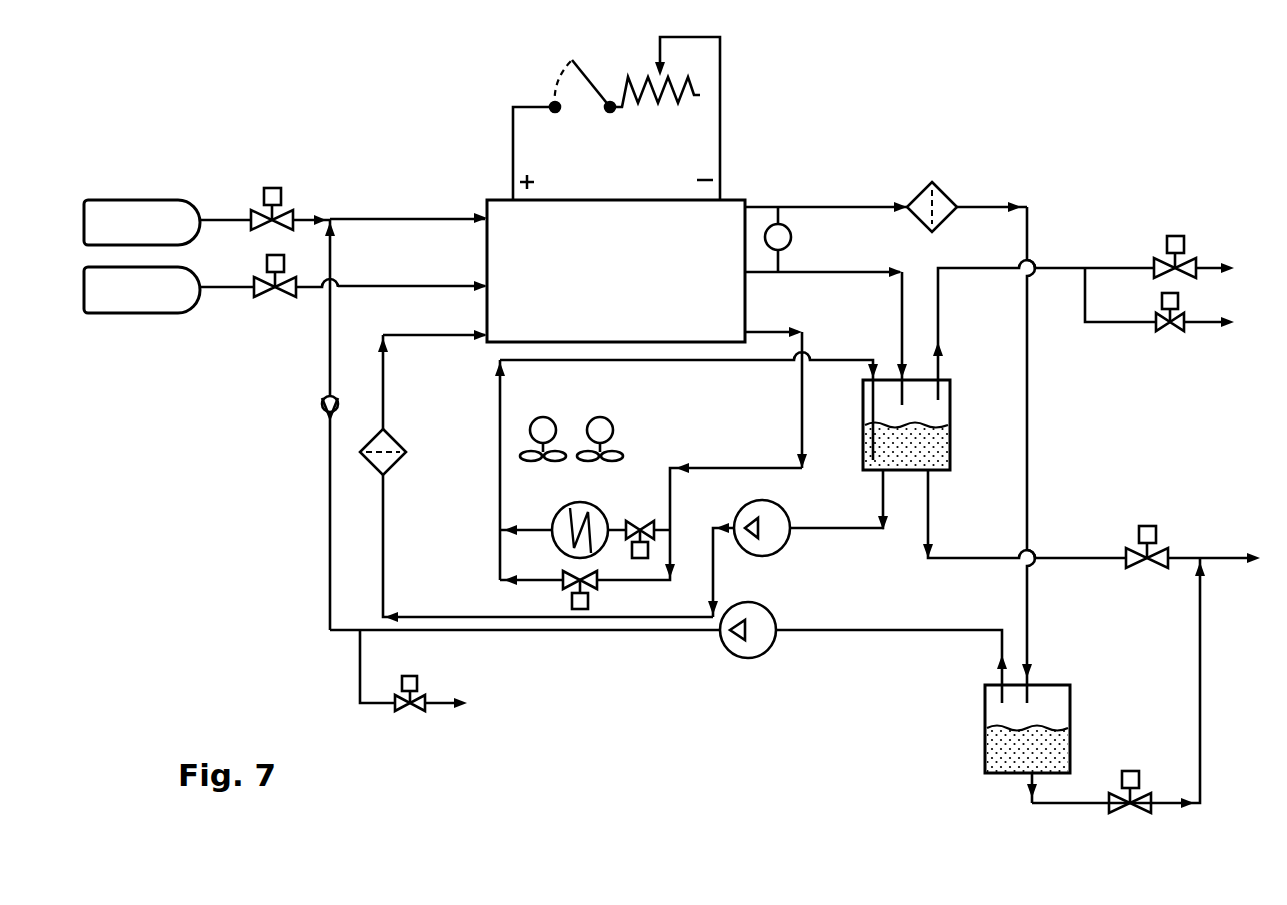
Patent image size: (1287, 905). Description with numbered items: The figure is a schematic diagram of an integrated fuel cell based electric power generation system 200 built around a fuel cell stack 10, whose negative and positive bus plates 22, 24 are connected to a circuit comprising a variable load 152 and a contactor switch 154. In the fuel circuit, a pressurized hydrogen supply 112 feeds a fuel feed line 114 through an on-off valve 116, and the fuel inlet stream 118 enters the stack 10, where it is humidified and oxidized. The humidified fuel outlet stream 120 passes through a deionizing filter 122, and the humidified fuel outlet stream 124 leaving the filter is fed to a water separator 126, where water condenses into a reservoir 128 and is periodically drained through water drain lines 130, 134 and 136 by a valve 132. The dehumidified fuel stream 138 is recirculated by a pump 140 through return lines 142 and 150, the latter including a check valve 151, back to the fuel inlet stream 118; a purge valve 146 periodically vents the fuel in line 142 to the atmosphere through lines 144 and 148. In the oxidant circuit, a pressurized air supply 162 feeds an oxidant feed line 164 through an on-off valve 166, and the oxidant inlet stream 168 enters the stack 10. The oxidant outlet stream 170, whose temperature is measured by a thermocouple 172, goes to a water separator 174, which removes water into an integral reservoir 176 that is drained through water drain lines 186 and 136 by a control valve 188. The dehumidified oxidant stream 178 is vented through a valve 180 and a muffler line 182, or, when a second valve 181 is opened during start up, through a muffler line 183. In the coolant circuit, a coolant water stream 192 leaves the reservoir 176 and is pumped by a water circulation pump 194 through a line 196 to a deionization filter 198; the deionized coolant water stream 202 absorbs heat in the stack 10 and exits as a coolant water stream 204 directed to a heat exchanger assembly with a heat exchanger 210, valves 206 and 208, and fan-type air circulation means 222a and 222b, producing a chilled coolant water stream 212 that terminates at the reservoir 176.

The fuel cell stack 10 is at (604, 213).
The negative bus plate 22 is at (745, 186).
The positive bus plate 24 is at (513, 185).
The hydrogen supply 112 is at (120, 205).
The fuel feed line 114 is at (232, 218).
The on-off valve 116 is at (283, 191).
The fuel inlet stream 118 is at (390, 170).
The humidified fuel outlet stream 120 is at (825, 205).
The deionizing filter 122 is at (945, 200).
The humidified fuel outlet stream 124 is at (1030, 395).
The water separator 126 is at (1057, 703).
The reservoir 128 is at (1062, 745).
The water drain line 130 is at (1035, 804).
The valve 132 is at (1130, 771).
The water drain line 134 is at (1202, 630).
The water drain line 136 is at (1225, 557).
The dehumidified fuel stream 138 is at (870, 635).
The pump 140 is at (745, 652).
The return line 142 is at (578, 633).
The line 144 is at (360, 680).
The purge valve 146 is at (418, 684).
The line 148 is at (440, 706).
The return line 150 is at (330, 585).
The check valve 151 is at (325, 406).
The variable load 152 is at (658, 60).
The contactor switch 154 is at (553, 77).
The air supply 162 is at (110, 312).
The oxidant feed line 164 is at (235, 290).
The on-off valve 166 is at (273, 255).
The oxidant inlet stream 168 is at (358, 284).
The oxidant outlet stream 170 is at (812, 270).
The thermocouple 172 is at (778, 223).
The water separator 174 is at (940, 405).
The reservoir 176 is at (935, 447).
The dehumidified oxidant stream 178 is at (940, 322).
The valve 180 is at (1175, 235).
The second valve 181 is at (1178, 302).
The muffler line 182 is at (1208, 266).
The muffler line 183 is at (1205, 324).
The water drain line 186 is at (932, 512).
The control valve 188 is at (1147, 526).
The coolant water stream 192 is at (883, 490).
The water circulation pump 194 is at (770, 548).
The line 196 is at (448, 615).
The deionization filter 198 is at (395, 460).
The integrated fuel cell based electric power generation system 200 is at (1052, 120).
The deionized coolant water stream 202 is at (447, 338).
The coolant water stream 204 is at (770, 362).
The valve 206 is at (559, 502).
The valve 208 is at (592, 602).
The heat exchanger 210 is at (592, 508).
The chilled coolant water stream 212 is at (500, 430).
The air circulation means 222a is at (545, 418).
The air circulation means 222b is at (613, 429).